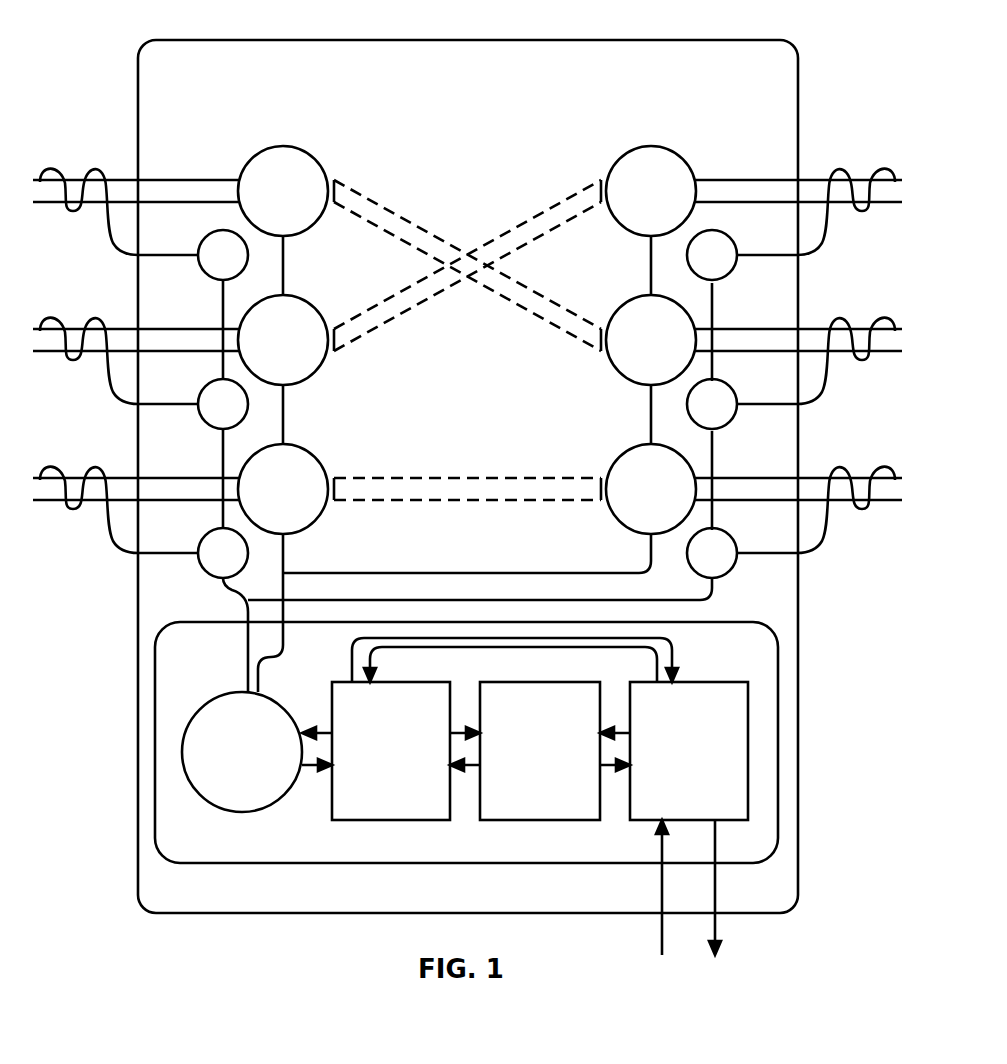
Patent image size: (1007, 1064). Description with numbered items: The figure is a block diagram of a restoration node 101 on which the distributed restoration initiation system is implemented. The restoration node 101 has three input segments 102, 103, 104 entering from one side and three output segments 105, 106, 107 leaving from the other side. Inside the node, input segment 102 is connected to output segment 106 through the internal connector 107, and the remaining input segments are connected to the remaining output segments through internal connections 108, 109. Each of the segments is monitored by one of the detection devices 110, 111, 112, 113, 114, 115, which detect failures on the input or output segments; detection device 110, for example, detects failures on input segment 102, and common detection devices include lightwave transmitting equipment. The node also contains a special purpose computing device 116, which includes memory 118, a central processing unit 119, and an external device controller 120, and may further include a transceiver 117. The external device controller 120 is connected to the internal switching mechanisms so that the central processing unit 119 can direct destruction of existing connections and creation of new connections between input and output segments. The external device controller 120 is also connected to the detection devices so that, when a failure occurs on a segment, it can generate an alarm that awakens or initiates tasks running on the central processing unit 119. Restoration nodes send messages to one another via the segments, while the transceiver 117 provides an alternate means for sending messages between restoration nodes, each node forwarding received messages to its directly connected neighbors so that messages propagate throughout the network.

The restoration node 101 is at (490, 40).
The input segment 102 is at (122, 181).
The input segment 103 is at (122, 330).
The input segment 104 is at (122, 479).
The output segment 105 is at (815, 181).
The output segment 106 is at (815, 330).
The internal connector 107 is at (382, 218).
The internal connection 108 is at (538, 224).
The internal connection 109 is at (470, 476).
The detection device 110 is at (199, 237).
The detection device 111 is at (199, 386).
The detection device 112 is at (199, 535).
The detection device 113 is at (737, 237).
The detection device 114 is at (737, 386).
The detection device 115 is at (737, 535).
The special purpose computing device 116 is at (236, 864).
The transceiver 117 is at (640, 822).
The memory 118 is at (541, 822).
The central processing unit 119 is at (396, 822).
The external device controller 120 is at (236, 812).